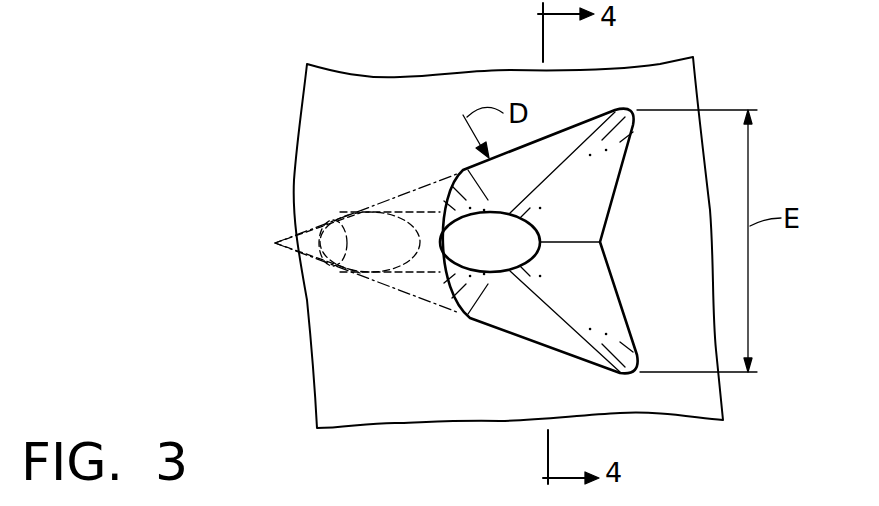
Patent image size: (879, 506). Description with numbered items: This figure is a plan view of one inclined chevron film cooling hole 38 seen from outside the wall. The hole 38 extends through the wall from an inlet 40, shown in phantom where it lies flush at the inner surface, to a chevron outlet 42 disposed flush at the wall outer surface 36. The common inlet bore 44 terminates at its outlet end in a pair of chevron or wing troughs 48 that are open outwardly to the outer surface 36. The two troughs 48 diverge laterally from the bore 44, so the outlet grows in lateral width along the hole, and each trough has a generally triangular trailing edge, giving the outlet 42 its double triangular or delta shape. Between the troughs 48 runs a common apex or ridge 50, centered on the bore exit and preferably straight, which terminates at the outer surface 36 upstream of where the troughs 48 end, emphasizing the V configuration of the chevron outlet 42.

The outer surface 36 is at (366, 120).
The chevron hole 38 is at (464, 322).
The inlet 40 is at (330, 274).
The chevron outlet 42 is at (534, 334).
The inlet bore 44 is at (499, 255).
The wing troughs 48 is at (589, 213).
The common ridge 50 is at (580, 241).